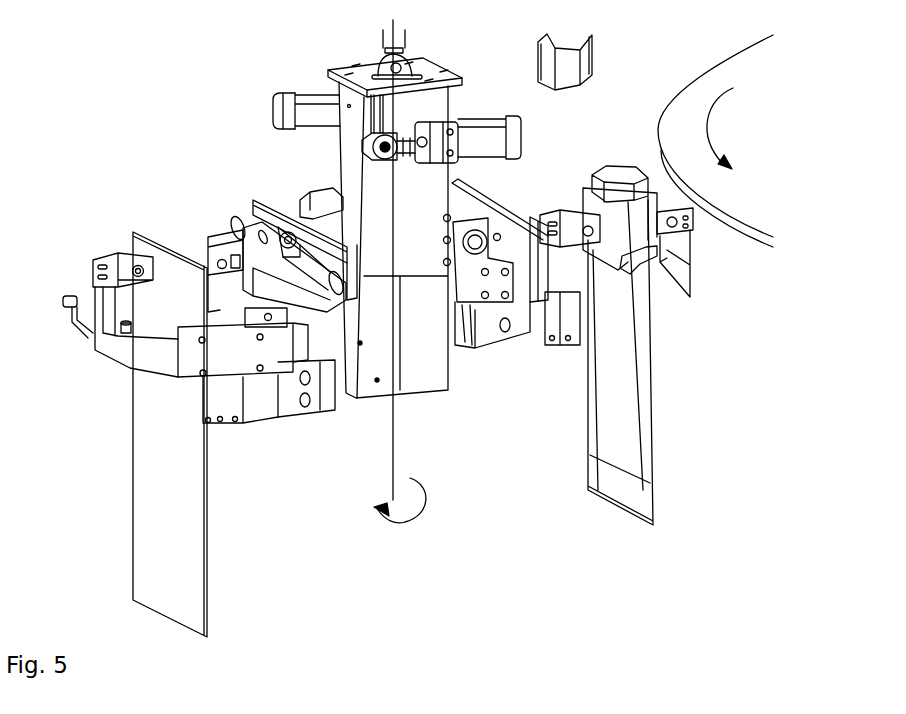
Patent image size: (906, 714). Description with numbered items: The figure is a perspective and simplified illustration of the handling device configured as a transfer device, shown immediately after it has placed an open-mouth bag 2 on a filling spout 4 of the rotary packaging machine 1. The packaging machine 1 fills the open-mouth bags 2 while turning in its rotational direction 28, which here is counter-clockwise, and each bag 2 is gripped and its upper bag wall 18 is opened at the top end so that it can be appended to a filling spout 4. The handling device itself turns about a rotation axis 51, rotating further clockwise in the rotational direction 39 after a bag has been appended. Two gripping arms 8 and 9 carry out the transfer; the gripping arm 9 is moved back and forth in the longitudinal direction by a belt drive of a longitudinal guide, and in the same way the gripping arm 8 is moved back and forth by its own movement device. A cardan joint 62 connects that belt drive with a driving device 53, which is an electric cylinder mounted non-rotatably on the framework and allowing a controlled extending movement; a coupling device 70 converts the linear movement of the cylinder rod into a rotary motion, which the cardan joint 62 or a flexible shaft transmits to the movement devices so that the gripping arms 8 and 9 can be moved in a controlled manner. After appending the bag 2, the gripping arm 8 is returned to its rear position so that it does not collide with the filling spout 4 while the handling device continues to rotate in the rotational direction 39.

The rotary packaging machine 1 is at (755, 60).
The open-mouth bag 2 is at (216, 572).
The filling spout 4 is at (598, 55).
The gripping arm 8 is at (563, 182).
The gripping arm 9 is at (122, 210).
The upper bag wall 18 is at (642, 325).
The rotational direction 28 is at (710, 125).
The rotational direction 39 is at (425, 511).
The rotation axis 51 is at (397, 430).
The driving device 53 is at (383, 43).
The cardan joint 62 is at (300, 203).
The coupling device 70 is at (347, 152).